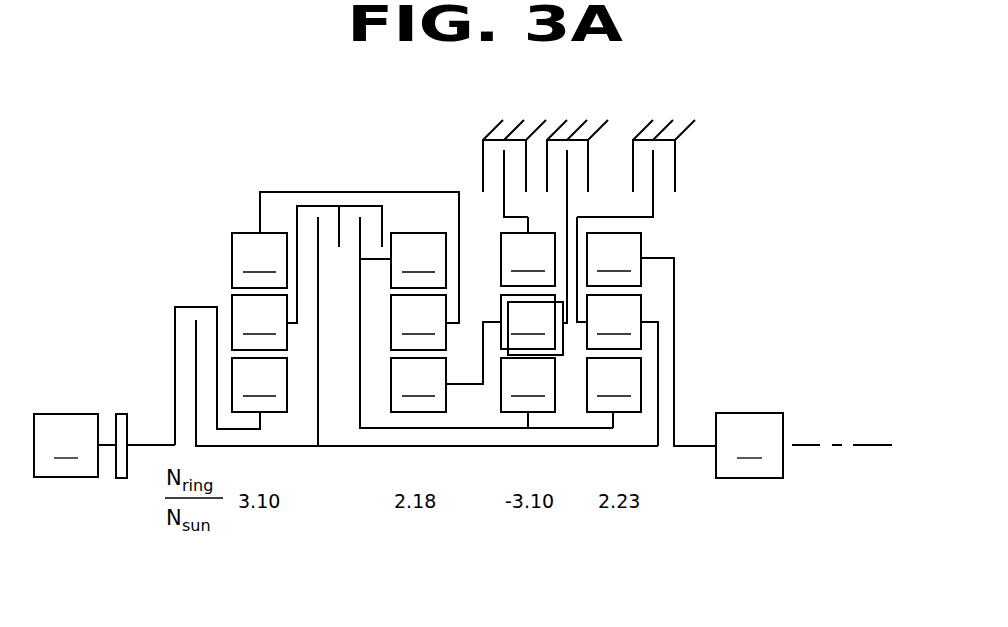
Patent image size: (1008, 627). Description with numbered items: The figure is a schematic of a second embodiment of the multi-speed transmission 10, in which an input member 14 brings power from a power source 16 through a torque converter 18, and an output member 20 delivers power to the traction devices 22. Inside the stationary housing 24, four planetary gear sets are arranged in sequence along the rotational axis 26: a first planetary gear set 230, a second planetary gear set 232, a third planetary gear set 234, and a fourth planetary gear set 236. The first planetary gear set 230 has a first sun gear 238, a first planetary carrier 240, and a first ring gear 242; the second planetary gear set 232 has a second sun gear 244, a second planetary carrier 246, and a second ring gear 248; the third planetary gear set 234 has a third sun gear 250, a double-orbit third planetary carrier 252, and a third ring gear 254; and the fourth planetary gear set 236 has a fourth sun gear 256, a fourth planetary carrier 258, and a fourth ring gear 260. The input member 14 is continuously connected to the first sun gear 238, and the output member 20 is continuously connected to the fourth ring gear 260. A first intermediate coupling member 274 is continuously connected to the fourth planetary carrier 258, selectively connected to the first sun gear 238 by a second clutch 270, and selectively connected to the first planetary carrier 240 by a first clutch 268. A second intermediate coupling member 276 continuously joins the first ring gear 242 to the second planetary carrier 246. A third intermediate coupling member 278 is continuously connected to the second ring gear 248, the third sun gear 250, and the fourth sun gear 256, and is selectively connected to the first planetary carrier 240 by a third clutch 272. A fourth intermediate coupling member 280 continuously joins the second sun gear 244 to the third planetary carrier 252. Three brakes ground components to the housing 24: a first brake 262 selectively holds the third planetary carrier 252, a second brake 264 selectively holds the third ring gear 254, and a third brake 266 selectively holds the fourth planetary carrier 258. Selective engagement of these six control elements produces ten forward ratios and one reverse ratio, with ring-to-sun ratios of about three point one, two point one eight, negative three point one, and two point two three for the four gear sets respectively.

The multi-speed transmission 10 is at (218, 143).
The input member 14 is at (170, 445).
The power source 16 is at (75, 445).
The torque converter 18 is at (115, 417).
The output member 20 is at (690, 443).
The traction devices 22 is at (749, 445).
The stationary housing 24 is at (500, 127).
The rotational axis 26 is at (817, 443).
The first planetary gear set 230 is at (238, 228).
The second planetary gear set 232 is at (398, 231).
The third planetary gear set 234 is at (492, 246).
The fourth planetary gear set 236 is at (659, 235).
The first sun gear 238 is at (259, 385).
The first planetary carrier 240 is at (259, 322).
The first ring gear 242 is at (259, 260).
The second sun gear 244 is at (418, 385).
The second planetary carrier 246 is at (418, 322).
The second ring gear 248 is at (418, 260).
The third sun gear 250 is at (528, 393).
The third planetary carrier 252 is at (534, 252).
The third ring gear 254 is at (528, 251).
The fourth sun gear 256 is at (614, 393).
The fourth planetary carrier 258 is at (617, 331).
The fourth ring gear 260 is at (614, 259).
The first brake 262 is at (588, 153).
The second brake 264 is at (482, 150).
The third brake 266 is at (677, 160).
The first clutch 268 is at (305, 206).
The second clutch 270 is at (190, 307).
The third clutch 272 is at (357, 206).
The first intermediate coupling member 274 is at (300, 446).
The second intermediate coupling member 276 is at (377, 192).
The third intermediate coupling member 278 is at (360, 428).
The fourth intermediate coupling member 280 is at (455, 387).